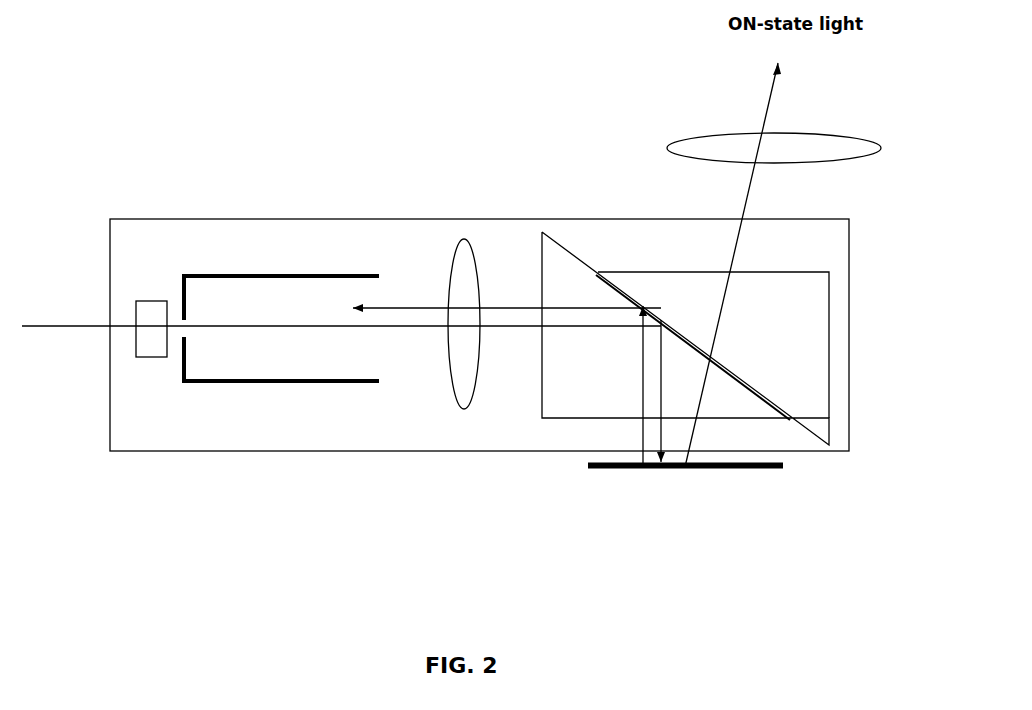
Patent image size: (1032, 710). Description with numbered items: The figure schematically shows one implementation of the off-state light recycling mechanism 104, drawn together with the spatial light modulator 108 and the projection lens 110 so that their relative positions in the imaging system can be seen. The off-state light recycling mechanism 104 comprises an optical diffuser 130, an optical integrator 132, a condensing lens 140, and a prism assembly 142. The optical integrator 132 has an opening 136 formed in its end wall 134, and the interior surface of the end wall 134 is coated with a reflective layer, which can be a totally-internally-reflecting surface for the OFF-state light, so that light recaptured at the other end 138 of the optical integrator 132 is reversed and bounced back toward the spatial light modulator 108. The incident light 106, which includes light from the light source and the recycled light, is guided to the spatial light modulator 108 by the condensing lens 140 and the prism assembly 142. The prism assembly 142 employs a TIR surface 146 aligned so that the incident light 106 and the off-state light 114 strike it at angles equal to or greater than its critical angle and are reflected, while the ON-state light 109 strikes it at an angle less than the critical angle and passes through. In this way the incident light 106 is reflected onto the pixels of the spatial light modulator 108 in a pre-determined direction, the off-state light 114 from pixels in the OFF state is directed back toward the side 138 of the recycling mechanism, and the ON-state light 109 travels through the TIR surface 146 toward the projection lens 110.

The off-state light recycling mechanism 104 is at (198, 218).
The incident light 106 is at (570, 325).
The spatial light modulator 108 is at (682, 470).
The ON-state light 109 is at (737, 238).
The projection lens 110 is at (712, 148).
The off-state light 114 is at (640, 433).
The optical diffuser 130 is at (136, 312).
The optical integrator 132 is at (242, 275).
The end wall 134 is at (183, 300).
The opening 136 is at (190, 332).
The other end 138 is at (378, 338).
The condensing lens 140 is at (462, 237).
The prism assembly 142 is at (595, 242).
The TIR surface 146 is at (780, 407).